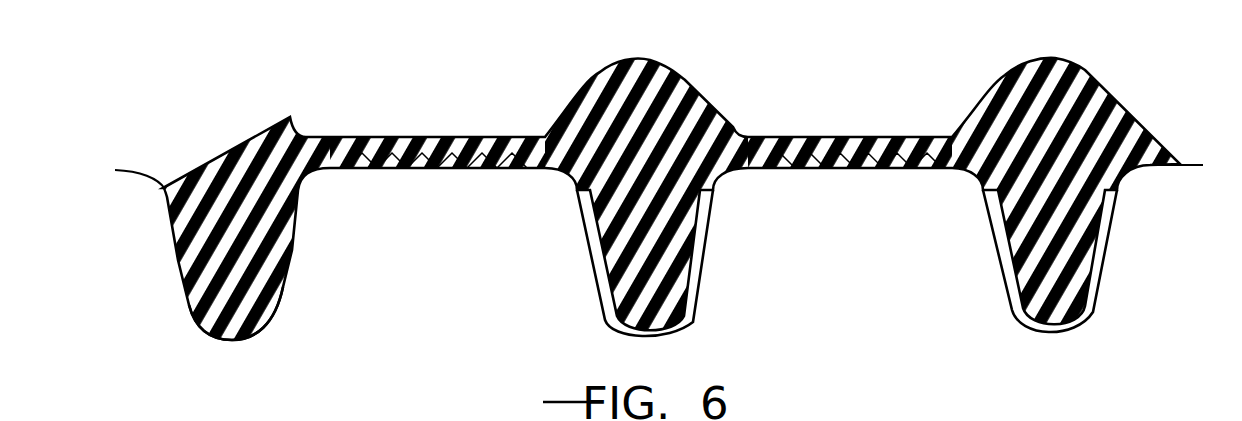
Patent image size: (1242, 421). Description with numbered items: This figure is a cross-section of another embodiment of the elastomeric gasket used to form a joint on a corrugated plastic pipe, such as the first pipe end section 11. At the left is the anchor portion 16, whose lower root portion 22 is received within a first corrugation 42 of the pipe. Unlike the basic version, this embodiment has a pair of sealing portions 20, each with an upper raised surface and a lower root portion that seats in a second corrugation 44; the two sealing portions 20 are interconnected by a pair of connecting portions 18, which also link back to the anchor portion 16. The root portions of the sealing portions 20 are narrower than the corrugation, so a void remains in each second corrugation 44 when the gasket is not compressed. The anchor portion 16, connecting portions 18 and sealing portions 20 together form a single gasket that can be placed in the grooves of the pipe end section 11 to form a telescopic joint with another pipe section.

The first pipe end section 11 is at (1190, 165).
The anchor portion 16 is at (227, 186).
The connecting portion 18 is at (393, 137).
The sealing portion 20 is at (673, 98).
The lower root portion 22 is at (198, 328).
The first corrugation 42 is at (248, 337).
The second corrugation 44 is at (635, 327).